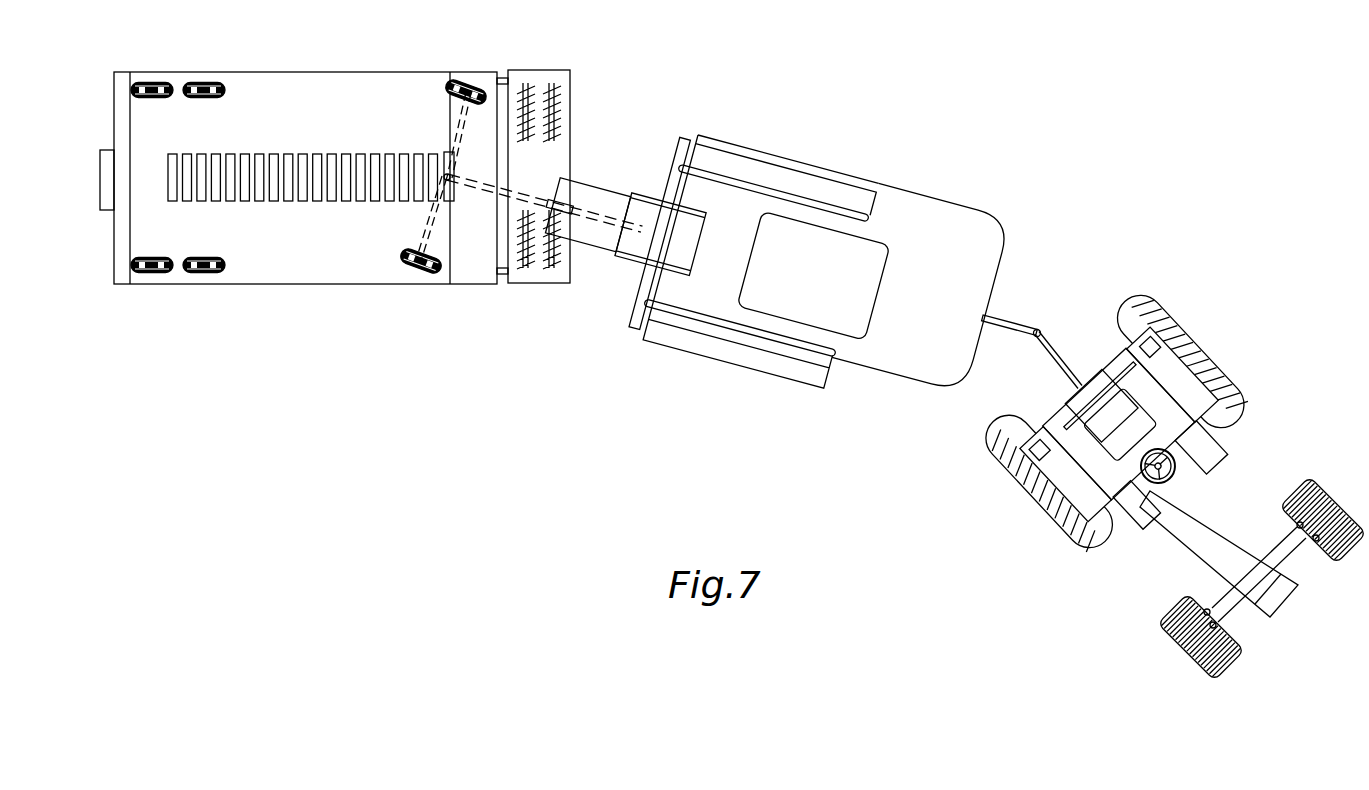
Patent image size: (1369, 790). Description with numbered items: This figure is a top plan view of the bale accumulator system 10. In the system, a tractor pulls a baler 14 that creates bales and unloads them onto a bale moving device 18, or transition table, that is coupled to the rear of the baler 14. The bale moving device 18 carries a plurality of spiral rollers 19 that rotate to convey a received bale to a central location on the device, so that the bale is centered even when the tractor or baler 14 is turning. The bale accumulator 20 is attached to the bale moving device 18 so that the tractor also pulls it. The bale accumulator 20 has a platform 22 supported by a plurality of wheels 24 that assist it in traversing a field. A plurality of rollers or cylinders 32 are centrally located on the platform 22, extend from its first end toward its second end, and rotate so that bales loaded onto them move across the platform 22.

The bale accumulator system 10 is at (1280, 329).
The baler 14 is at (933, 237).
The bale moving device 18 is at (570, 88).
The spiral rollers 19 is at (562, 128).
The bale accumulator 20 is at (262, 35).
The platform 22 is at (268, 267).
The wheels 24 is at (197, 82).
The rollers 32 is at (360, 152).